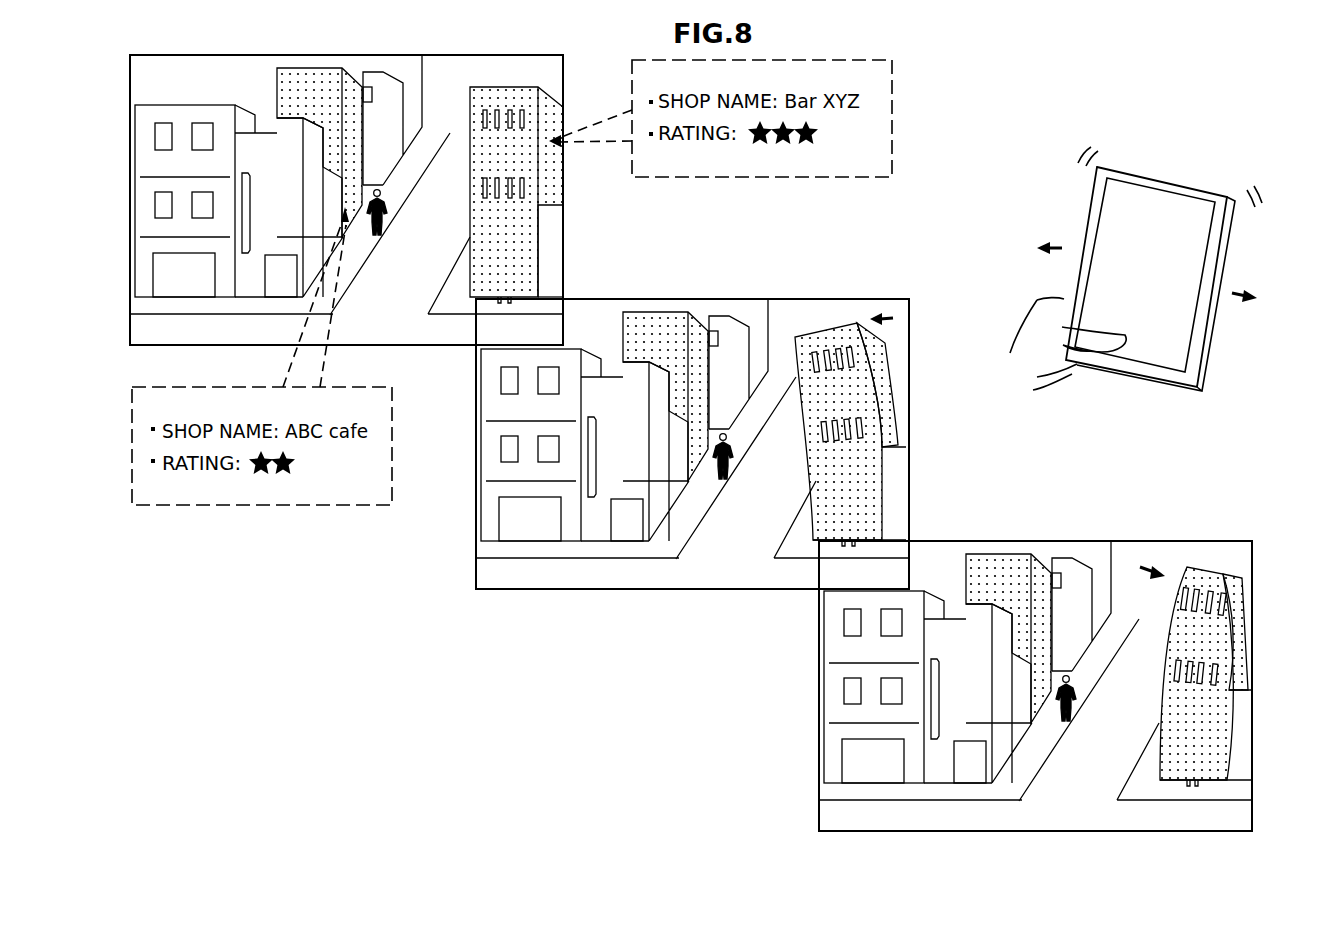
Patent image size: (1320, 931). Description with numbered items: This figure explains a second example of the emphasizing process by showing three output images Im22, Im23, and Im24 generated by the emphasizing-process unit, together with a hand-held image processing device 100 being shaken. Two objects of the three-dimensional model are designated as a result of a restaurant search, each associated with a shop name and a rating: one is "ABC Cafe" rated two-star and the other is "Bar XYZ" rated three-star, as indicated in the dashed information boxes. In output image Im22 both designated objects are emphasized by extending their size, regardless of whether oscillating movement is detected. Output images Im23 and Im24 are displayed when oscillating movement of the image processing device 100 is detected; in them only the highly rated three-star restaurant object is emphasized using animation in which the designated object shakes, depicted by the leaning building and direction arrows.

The output image Im22 is at (376, 185).
The output image Im23 is at (716, 426).
The output image Im24 is at (1066, 666).
The image processing device 100 is at (1163, 183).